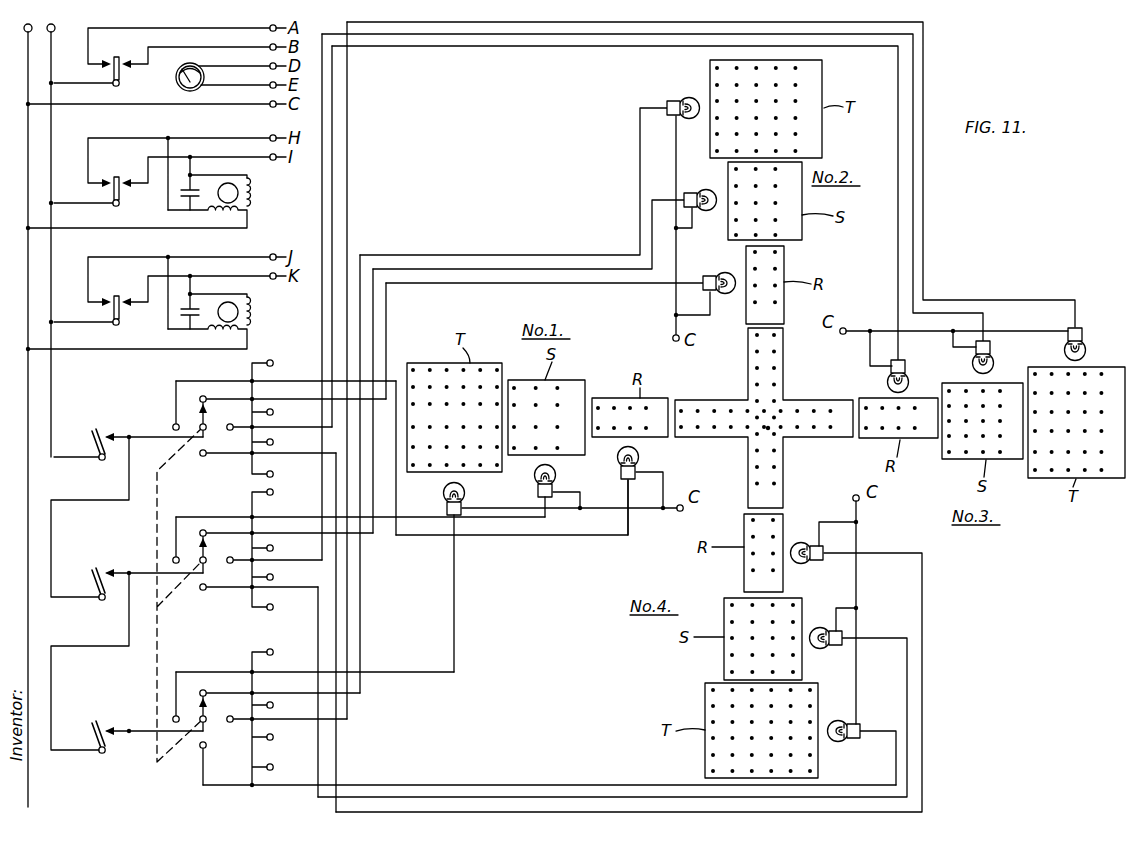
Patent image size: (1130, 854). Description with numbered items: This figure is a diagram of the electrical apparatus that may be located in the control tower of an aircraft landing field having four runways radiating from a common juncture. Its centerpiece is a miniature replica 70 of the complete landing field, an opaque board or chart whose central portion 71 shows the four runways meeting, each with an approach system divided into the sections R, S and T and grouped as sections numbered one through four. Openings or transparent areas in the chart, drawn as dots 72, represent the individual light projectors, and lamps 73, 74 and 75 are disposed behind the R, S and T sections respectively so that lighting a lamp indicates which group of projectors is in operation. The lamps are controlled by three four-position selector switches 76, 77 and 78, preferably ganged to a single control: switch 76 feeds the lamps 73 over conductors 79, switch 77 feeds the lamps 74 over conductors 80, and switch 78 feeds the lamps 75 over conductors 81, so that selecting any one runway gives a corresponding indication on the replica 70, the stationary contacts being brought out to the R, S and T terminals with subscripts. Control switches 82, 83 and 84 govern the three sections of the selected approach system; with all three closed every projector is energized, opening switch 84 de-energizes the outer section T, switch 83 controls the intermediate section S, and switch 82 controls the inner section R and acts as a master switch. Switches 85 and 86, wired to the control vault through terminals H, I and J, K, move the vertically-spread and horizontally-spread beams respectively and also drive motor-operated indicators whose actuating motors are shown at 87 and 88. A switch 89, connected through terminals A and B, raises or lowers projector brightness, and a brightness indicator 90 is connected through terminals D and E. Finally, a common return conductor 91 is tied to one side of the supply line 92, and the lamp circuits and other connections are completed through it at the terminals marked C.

The miniature replica of the landing field 70 is at (730, 395).
The central portion of the replica 71 is at (768, 428).
The dots 72 is at (716, 85).
The lamps for section R 73 is at (640, 459).
The lamps for section S 74 is at (557, 475).
The lamps for section T 75 is at (466, 494).
The selector switch 76 is at (208, 409).
The selector switch 77 is at (208, 543).
The selector switch 78 is at (208, 703).
The conductors 79 is at (306, 450).
The conductors 80 is at (306, 585).
The conductors 81 is at (306, 783).
The control switch 82 is at (91, 436).
The control switch 83 is at (91, 575).
The control switch 84 is at (91, 728).
The beam-movement switch 85 is at (119, 196).
The beam-movement switch 86 is at (119, 315).
The indicator actuating motor 87 is at (252, 196).
The indicator actuating motor 88 is at (252, 315).
The brightness switch 89 is at (117, 57).
The brightness indicator 90 is at (177, 82).
The common return conductor 91 is at (100, 106).
The supply line 92 is at (30, 60).